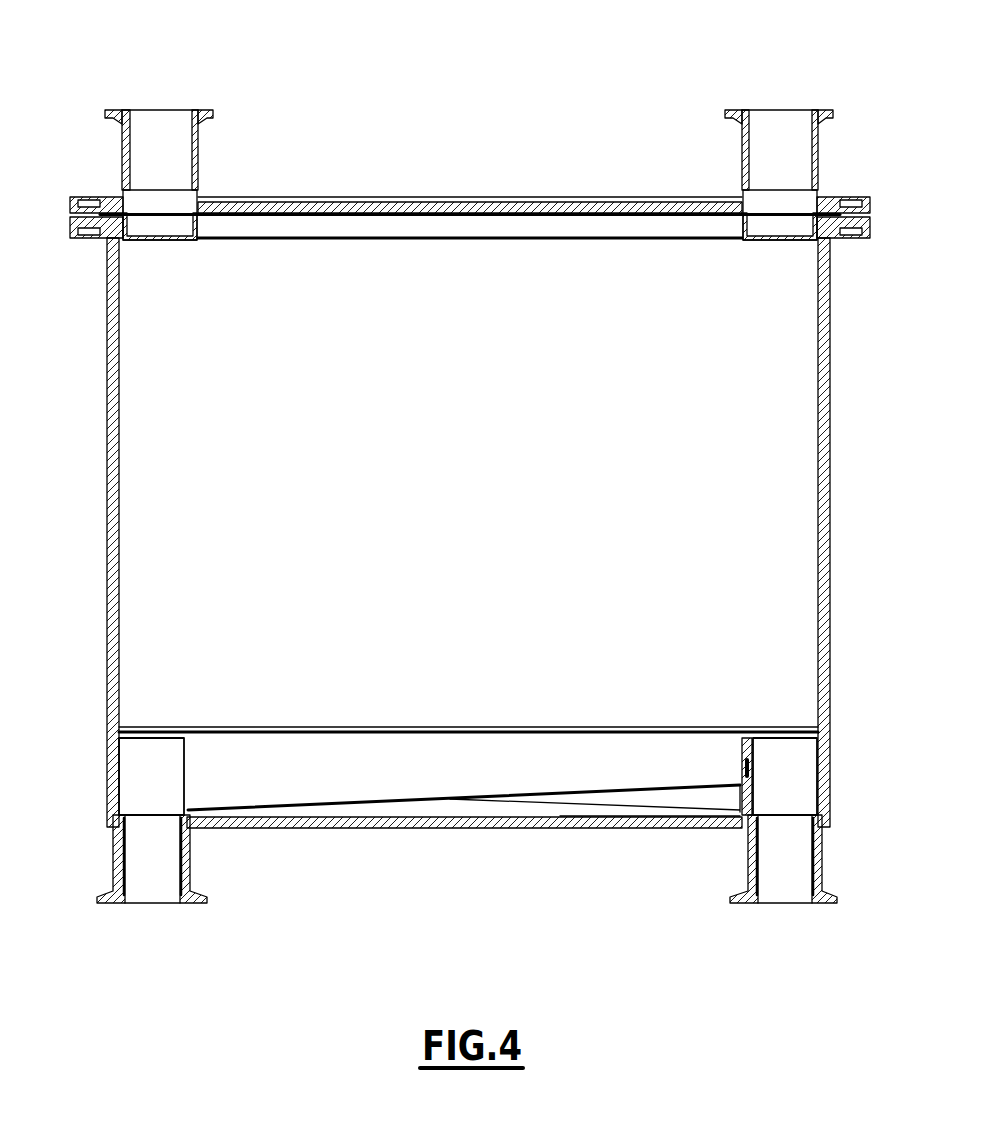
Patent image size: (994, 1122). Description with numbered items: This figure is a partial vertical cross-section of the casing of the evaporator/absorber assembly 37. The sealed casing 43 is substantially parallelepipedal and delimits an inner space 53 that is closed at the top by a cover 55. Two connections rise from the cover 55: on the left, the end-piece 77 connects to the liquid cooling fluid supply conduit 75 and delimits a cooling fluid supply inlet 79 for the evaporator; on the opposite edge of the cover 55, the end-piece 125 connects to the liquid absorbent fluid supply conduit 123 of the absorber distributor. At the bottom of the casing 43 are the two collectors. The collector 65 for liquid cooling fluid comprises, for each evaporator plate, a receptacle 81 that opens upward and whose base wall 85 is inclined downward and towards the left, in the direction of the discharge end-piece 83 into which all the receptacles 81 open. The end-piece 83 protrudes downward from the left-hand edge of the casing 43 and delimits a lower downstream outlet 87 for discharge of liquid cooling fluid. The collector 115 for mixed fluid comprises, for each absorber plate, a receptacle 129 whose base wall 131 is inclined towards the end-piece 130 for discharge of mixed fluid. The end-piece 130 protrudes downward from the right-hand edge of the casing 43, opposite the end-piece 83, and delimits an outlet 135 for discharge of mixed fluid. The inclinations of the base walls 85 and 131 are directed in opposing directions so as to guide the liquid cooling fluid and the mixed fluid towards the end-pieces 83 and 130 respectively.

The evaporator/absorber assembly 37 is at (476, 81).
The sealed casing 43 is at (97, 430).
The inner space 53 is at (485, 504).
The cover 55 is at (367, 210).
The liquid cooling fluid supply conduit 75 is at (160, 153).
The end-piece 77 is at (140, 158).
The cooling fluid supply inlet 79 is at (147, 118).
The liquid absorbent fluid supply conduit 123 is at (780, 153).
The end-piece 125 is at (812, 155).
The discharge end-piece 83 is at (112, 848).
The lower downstream outlet 87 is at (150, 900).
The end-piece for discharge of mixed fluid 130 is at (822, 858).
The outlet for discharge of mixed fluid 135 is at (786, 900).
The collector for mixed fluid 115 is at (641, 865).
The collector 65 is at (266, 815).
The receptacle 81 is at (364, 790).
The base wall 85 is at (436, 798).
The receptacle for collecting liquid mixed fluid 129 is at (683, 795).
The base wall 131 is at (615, 812).